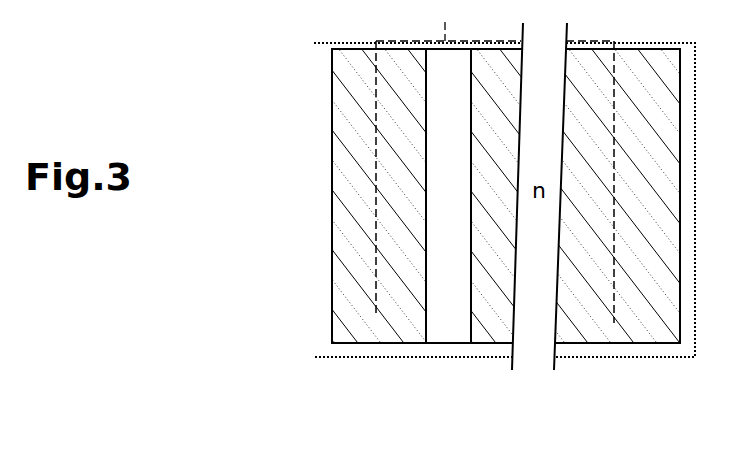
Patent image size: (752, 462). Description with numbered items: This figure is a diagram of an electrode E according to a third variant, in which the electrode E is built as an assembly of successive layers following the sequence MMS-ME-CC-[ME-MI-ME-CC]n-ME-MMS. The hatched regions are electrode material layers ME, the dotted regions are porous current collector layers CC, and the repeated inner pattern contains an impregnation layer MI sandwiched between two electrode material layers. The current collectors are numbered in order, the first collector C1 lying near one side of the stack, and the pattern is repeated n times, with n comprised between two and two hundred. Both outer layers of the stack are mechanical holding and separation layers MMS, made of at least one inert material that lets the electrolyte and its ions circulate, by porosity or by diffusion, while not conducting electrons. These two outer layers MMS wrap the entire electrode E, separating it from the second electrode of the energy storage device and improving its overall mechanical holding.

The mechanical holding and separation layer MMS is at (312, 197).
The electrode E is at (395, 338).
The impregnation layer MI is at (446, 338).
The collector C1 is at (366, 100).